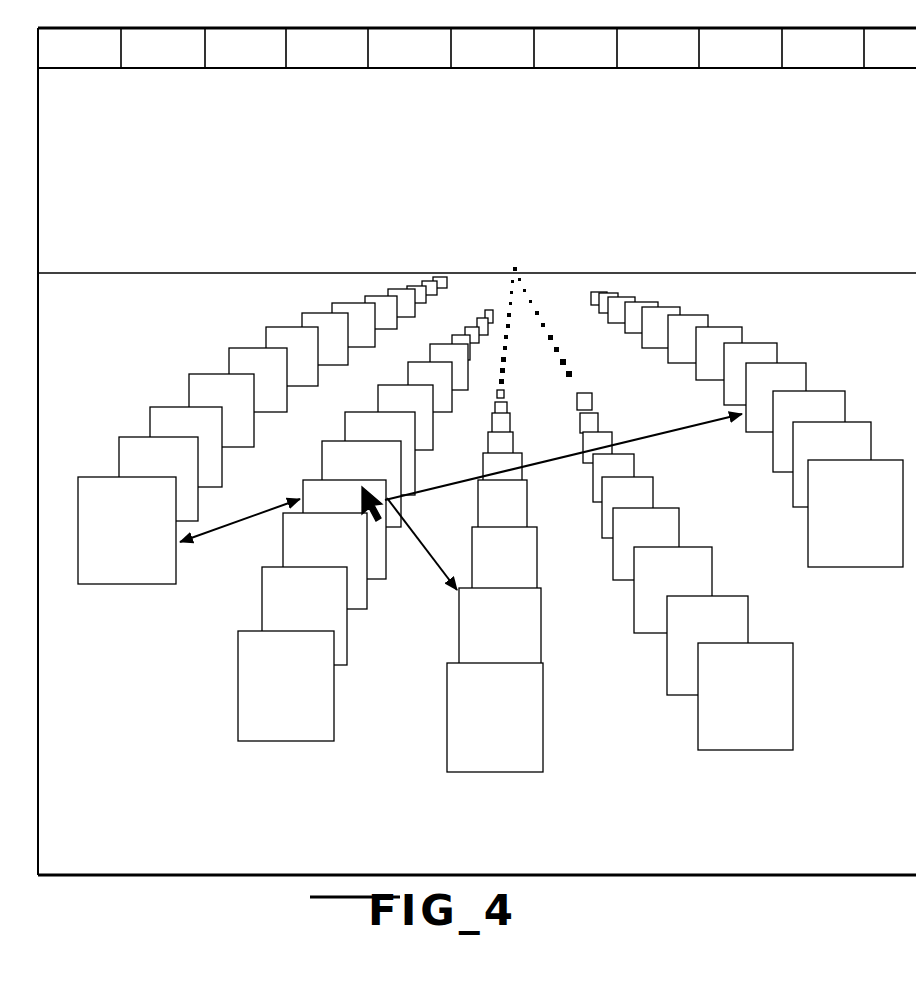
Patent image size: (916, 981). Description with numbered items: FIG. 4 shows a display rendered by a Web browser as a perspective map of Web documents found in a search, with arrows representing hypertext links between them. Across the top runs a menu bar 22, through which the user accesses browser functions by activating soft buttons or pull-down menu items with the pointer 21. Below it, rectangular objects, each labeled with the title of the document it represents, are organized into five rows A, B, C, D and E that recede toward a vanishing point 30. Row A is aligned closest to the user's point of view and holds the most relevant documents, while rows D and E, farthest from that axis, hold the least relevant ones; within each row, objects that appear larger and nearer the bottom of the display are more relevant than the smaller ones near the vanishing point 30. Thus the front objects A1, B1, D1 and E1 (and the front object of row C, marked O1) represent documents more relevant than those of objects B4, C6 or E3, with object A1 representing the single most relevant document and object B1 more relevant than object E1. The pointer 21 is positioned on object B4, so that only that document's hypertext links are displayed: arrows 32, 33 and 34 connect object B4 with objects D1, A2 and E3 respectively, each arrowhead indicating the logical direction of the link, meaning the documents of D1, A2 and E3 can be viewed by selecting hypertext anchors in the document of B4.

The menu bar 22 is at (205, 69).
The vanishing point 30 is at (515, 268).
The pointer 21 is at (373, 485).
The arrow 32 is at (228, 532).
The arrow 33 is at (423, 553).
The arrow 34 is at (547, 460).
The row D is at (262, 456).
The object D1 is at (145, 584).
The row B is at (365, 548).
The object B1 is at (305, 741).
The object B4 is at (303, 480).
The row A is at (513, 601).
The object A1 is at (520, 772).
The object A2 is at (542, 627).
The row C is at (693, 579).
The object C6 is at (640, 457).
The title C document O1 is at (757, 750).
The row E is at (747, 454).
The object E1 is at (866, 567).
The object E3 is at (793, 358).